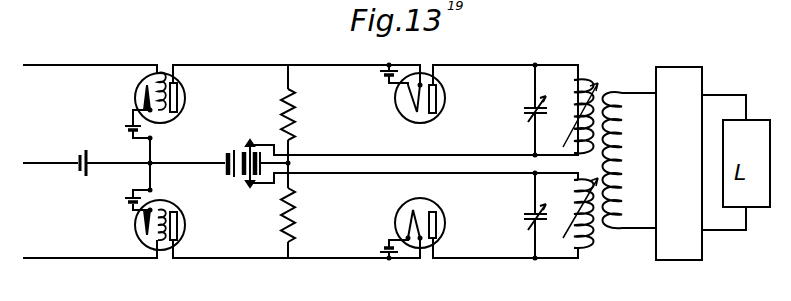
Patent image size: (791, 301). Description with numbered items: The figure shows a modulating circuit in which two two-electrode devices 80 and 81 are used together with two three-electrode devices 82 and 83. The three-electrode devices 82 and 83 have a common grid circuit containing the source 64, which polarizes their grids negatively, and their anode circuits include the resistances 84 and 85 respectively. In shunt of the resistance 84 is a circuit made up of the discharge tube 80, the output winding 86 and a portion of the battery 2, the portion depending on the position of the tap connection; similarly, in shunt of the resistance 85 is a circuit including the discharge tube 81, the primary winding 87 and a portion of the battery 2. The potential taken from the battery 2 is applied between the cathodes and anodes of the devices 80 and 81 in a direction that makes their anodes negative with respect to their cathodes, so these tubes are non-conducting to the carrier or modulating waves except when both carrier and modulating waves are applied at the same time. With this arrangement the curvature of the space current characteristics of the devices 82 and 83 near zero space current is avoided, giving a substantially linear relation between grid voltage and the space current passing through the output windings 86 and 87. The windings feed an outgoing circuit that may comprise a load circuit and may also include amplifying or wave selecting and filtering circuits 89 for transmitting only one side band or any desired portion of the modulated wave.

The battery 2 is at (232, 153).
The source 64 is at (83, 151).
The two-electrode device 80 is at (393, 108).
The two-electrode device 81 is at (402, 215).
The three-electrode device 82 is at (171, 119).
The three-electrode device 83 is at (167, 208).
The resistance 84 is at (295, 126).
The resistance 85 is at (292, 232).
The output winding 86 is at (578, 88).
The primary winding 87 is at (573, 248).
The amplifying or wave selecting and filtering circuits 89 is at (653, 163).